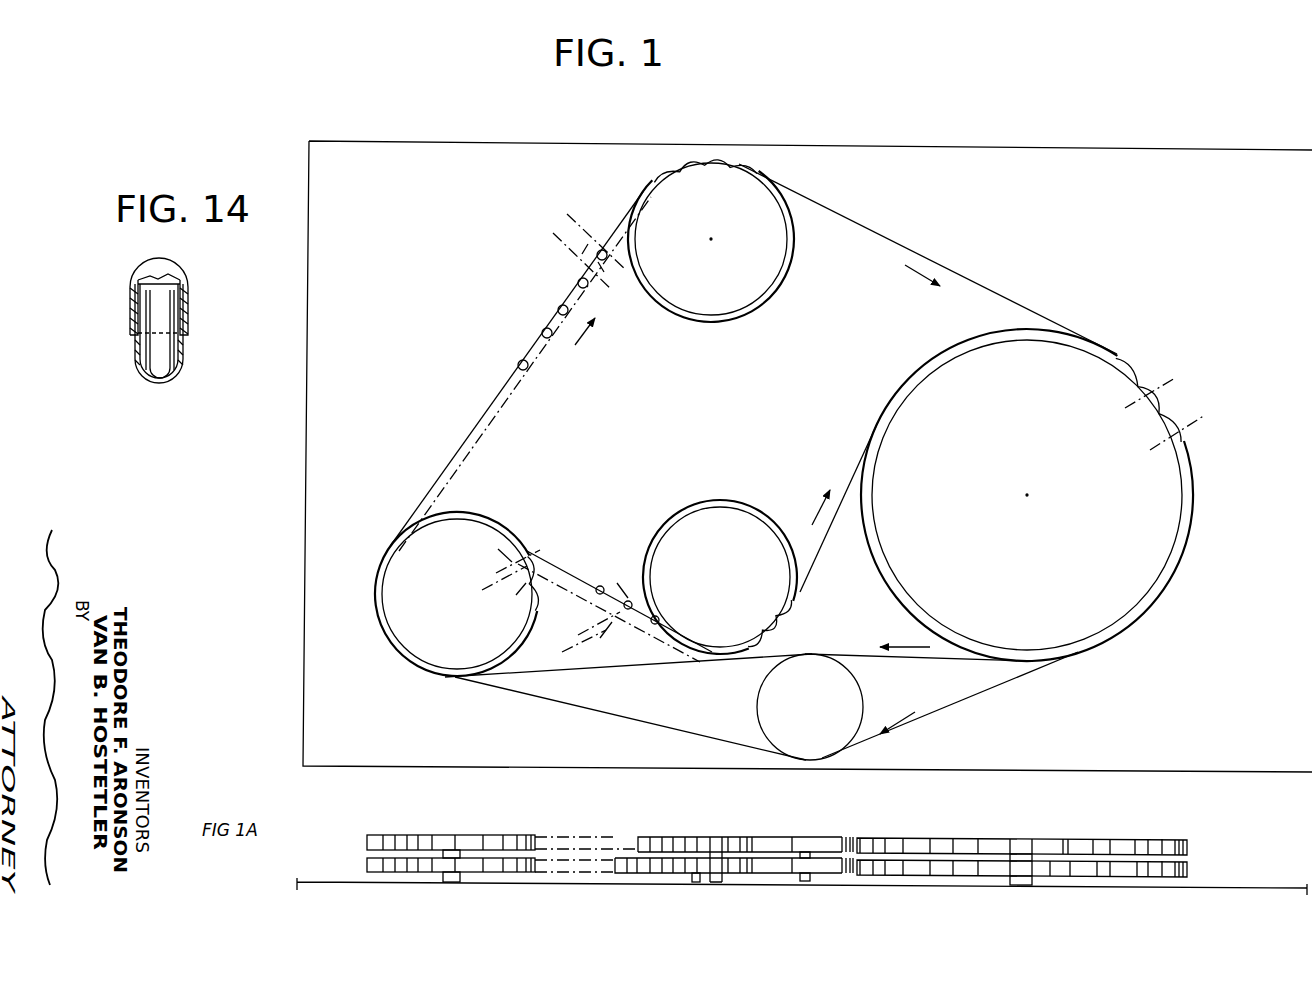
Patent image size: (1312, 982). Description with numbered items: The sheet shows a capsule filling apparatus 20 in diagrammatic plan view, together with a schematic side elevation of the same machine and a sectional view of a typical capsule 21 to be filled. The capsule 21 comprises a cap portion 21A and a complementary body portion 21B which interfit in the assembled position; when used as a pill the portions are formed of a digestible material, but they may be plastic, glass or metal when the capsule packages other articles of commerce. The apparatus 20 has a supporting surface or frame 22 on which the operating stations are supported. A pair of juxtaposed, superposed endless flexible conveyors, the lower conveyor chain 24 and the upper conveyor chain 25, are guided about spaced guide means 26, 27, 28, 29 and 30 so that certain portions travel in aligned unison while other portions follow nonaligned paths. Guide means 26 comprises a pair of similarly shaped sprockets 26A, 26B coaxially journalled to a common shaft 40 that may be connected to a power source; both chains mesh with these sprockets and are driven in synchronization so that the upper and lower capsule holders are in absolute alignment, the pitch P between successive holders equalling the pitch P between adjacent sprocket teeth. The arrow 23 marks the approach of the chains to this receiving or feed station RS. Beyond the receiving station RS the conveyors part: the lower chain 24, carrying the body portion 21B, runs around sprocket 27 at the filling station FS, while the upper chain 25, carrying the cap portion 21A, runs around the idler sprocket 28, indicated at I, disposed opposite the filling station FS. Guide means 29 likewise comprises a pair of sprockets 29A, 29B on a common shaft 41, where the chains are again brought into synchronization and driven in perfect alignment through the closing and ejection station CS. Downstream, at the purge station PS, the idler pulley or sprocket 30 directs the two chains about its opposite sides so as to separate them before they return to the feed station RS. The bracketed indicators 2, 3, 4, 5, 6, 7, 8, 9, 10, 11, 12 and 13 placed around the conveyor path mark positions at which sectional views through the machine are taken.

In FIG. 1, the capsule filling apparatus 20 is at (1238, 130).
In FIG. 1, the supporting surface or frame 22 is at (1150, 149).
In FIG. 1A, the supporting surface or frame 22 is at (296, 882).
In FIG. 1, the drum entry 23 is at (383, 541).
In FIG. 1, the lower conveyor chain 24 is at (496, 397).
In FIG. 1A, the lower conveyor chain 24 is at (595, 855).
In FIG. 1, the upper conveyor chain 25 is at (572, 566).
In FIG. 1A, the upper conveyor chain 25 is at (555, 836).
In FIG. 1, the guide means or sprocket 26 is at (473, 527).
In FIG. 1, the sprocket 27 is at (760, 284).
In FIG. 1A, the sprocket 27 is at (637, 858).
In FIG. 1, the idler sprocket 28 is at (750, 520).
In FIG. 1A, the idler sprocket 28 is at (716, 836).
In FIG. 1, the guide means 29 is at (946, 364).
In FIG. 1, the idler pulley or sprocket 30 is at (760, 700).
In FIG. 1A, the idler pulley or sprocket 30 is at (845, 838).
In FIG. 1, the section 2 is at (480, 723).
In FIG. 1, the section 3 is at (383, 695).
In FIG. 1, the section 4 is at (333, 627).
In FIG. 1, the section 5 is at (368, 503).
In FIG. 1, the section 6 is at (743, 112).
In FIG. 1, the section 7 is at (1193, 333).
In FIG. 1, the section 8 is at (1262, 566).
In FIG. 1, the section 9 is at (1152, 685).
In FIG. 1, the section 10 is at (1022, 733).
In FIG. 1, the section 11 is at (945, 693).
In FIG. 1, the section 12 is at (847, 759).
In FIG. 1, the section 13 is at (835, 650).
In FIG. 1, the filling station FS is at (803, 194).
In FIG. 1, the receiving station RS is at (398, 692).
In FIG. 1, the closing and ejection station CS is at (1176, 618).
In FIG. 1A, the closing and ejection station CS is at (1289, 809).
In FIG. 1, the purge station PS is at (878, 752).
In FIG. 1, the inspection station I is at (675, 506).
In FIG. 1, the pitch distance P is at (860, 439).
In FIG. 14, the capsule 21 is at (189, 277).
In FIG. 14, the cap portion 21A is at (184, 310).
In FIG. 14, the body portion 21B is at (178, 368).
In FIG. 1A, the sprocket 26A is at (367, 858).
In FIG. 1A, the sprocket 26B is at (443, 833).
In FIG. 1A, the sprocket 29A is at (1190, 869).
In FIG. 1A, the sprocket 29B is at (1190, 845).
In FIG. 1A, the common shaft 40 is at (448, 855).
In FIG. 1A, the common shaft 41 is at (1030, 858).